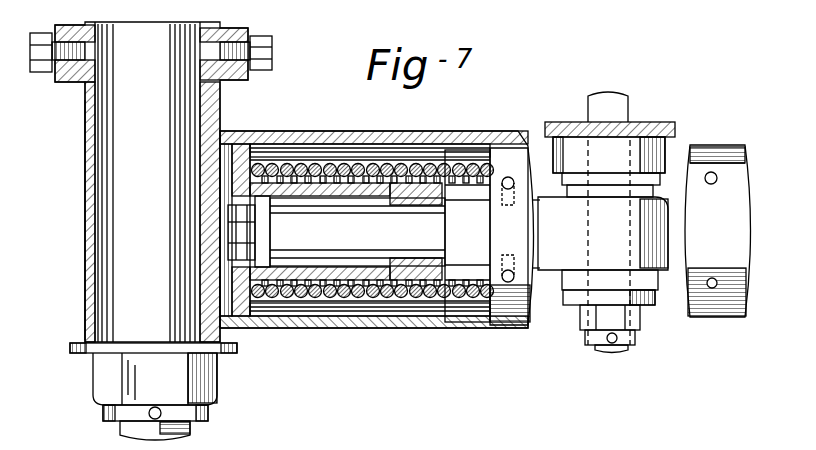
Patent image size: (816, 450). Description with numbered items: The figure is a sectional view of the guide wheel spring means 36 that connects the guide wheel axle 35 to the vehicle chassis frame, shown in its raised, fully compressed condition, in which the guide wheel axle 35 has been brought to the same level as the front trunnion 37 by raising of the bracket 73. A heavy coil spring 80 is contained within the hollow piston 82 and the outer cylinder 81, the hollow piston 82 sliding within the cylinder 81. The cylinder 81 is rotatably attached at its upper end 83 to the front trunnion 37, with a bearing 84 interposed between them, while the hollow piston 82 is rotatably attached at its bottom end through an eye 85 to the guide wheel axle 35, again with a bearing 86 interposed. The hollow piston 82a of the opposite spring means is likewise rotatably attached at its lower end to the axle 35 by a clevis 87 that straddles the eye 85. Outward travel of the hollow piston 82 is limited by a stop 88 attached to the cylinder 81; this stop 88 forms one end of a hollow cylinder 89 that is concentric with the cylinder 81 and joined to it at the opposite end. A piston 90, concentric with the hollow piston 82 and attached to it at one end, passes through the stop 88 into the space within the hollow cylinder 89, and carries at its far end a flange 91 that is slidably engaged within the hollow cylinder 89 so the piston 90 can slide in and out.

The guide wheel axle 35 is at (618, 352).
The guide wheel spring means 36 is at (403, 328).
The front trunnion 37 is at (190, 432).
The bracket 73 is at (645, 125).
The heavy coil spring 80 is at (354, 163).
The outer cylinder 81 is at (290, 328).
The hollow piston 82 is at (338, 328).
The hollow piston 82a is at (712, 317).
The upper end 83 is at (221, 106).
The bearing 84 is at (96, 281).
The eye 85 is at (612, 222).
The bearing 86 is at (585, 240).
The clevis 87 is at (650, 284).
The stop 88 is at (395, 205).
The hollow cylinder 89 is at (272, 156).
The piston 90 is at (347, 239).
The flange 91 is at (263, 214).